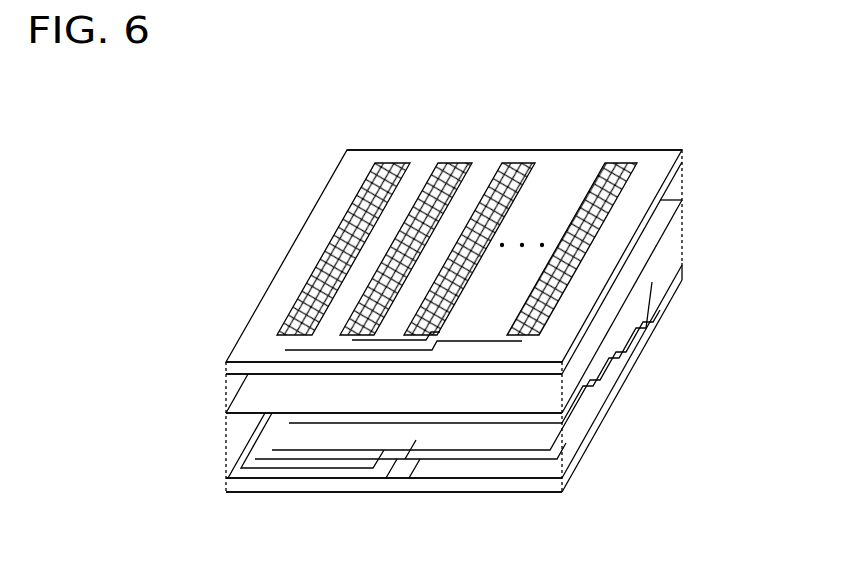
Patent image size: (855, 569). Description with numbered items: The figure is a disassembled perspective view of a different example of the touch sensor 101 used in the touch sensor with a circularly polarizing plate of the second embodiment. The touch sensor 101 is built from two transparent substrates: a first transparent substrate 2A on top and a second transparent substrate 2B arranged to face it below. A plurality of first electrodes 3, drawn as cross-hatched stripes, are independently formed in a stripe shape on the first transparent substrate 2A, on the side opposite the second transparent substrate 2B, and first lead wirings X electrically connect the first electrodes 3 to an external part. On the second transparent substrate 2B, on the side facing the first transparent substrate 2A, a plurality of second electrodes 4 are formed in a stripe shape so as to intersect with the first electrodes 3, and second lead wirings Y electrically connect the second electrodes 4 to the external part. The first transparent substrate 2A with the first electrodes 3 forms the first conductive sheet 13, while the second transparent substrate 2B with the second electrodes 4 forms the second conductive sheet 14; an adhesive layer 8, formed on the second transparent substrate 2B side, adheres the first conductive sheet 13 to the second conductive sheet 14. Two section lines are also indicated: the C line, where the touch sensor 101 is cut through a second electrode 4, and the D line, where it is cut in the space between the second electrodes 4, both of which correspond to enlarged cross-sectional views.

The touch sensor 101 is at (298, 129).
The first transparent substrate 2A is at (658, 163).
The second transparent substrate 2B is at (590, 455).
The first electrodes 3 is at (628, 163).
The second electrodes 4 is at (573, 393).
The adhesive layer 8 is at (284, 398).
The first conductive sheet 13 is at (578, 137).
The second conductive sheet 14 is at (495, 496).
The first lead wirings X is at (300, 347).
The second lead wirings Y is at (650, 301).
The C-C' cross-section line C is at (298, 263).
The D-D' cross-section line D is at (270, 317).